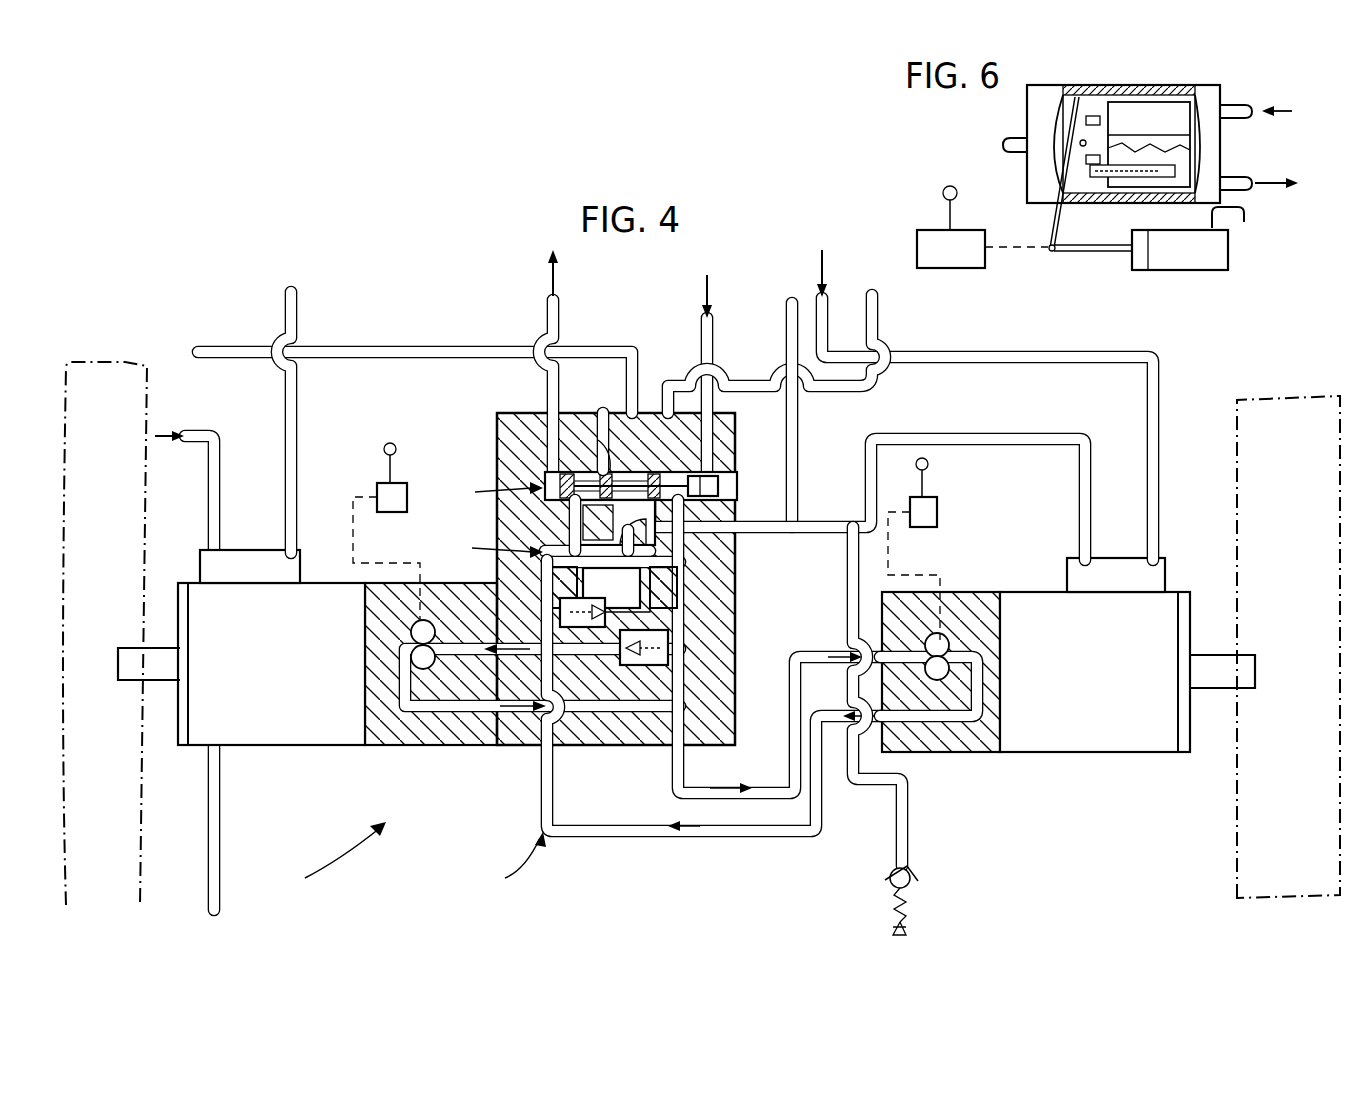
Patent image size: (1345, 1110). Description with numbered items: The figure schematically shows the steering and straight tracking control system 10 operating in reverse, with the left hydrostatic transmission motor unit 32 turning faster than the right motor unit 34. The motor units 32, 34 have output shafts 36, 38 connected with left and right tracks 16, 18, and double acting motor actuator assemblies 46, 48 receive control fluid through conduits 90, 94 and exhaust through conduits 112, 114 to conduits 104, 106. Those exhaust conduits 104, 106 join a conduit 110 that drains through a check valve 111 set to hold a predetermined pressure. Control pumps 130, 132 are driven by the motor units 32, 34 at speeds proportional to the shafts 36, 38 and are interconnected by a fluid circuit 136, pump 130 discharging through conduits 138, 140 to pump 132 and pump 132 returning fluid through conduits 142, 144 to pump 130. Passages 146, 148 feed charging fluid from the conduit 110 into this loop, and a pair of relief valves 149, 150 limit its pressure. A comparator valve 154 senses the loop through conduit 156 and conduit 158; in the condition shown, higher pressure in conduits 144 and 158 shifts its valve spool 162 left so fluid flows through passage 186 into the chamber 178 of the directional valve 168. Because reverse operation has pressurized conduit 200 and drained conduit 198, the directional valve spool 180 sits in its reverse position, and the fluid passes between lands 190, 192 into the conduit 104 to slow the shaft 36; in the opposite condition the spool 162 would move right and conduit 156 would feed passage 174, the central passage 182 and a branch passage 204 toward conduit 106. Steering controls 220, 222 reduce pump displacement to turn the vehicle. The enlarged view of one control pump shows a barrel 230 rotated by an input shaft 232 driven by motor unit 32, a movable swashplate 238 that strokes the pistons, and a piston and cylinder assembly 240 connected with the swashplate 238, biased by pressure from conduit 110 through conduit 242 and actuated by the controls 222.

In FIG. 4, the steering and straight tracking control system 10 is at (324, 859).
In FIG. 4, the left hand track 16 is at (100, 362).
In FIG. 4, the right hand track 18 is at (1285, 400).
In FIG. 4, the variable displacement motor unit 32 is at (270, 718).
In FIG. 4, the variable displacement motor unit 34 is at (1033, 605).
In FIG. 4, the output shaft 36 is at (116, 645).
In FIG. 4, the output shaft 38 is at (1260, 666).
In FIG. 4, the motor actuator assembly 46 is at (287, 560).
In FIG. 4, the motor actuator assembly 48 is at (1155, 562).
In FIG. 4, the conduit 90 is at (209, 500).
In FIG. 4, the conduit 94 is at (983, 363).
In FIG. 4, the conduit 104 is at (420, 352).
In FIG. 4, the conduit 106 is at (878, 386).
In FIG. 4, the conduit 110 is at (798, 433).
In FIG. 4, the check valve 111 is at (915, 890).
In FIG. 4, the conduit 112 is at (283, 378).
In FIG. 4, the conduit 114 is at (965, 440).
In FIG. 4, the control pump 130 is at (415, 623).
In FIG. 6, the control pump 130 is at (1224, 80).
In FIG. 4, the control pump 132 is at (947, 640).
In FIG. 4, the fluid circuit 136 is at (673, 727).
In FIG. 4, the conduit 138 is at (437, 648).
In FIG. 6, the conduit 138 is at (1250, 105).
In FIG. 4, the conduit 140 is at (735, 832).
In FIG. 4, the conduit 142 is at (672, 790).
In FIG. 4, the conduit 144 is at (458, 708).
In FIG. 6, the conduit 144 is at (1250, 178).
In FIG. 4, the passage 146 is at (552, 588).
In FIG. 4, the passage 148 is at (685, 600).
In FIG. 4, the relief valve 149 is at (611, 588).
In FIG. 4, the relief valve 150 is at (633, 662).
In FIG. 4, the comparator valve 154 is at (540, 529).
In FIG. 4, the conduit 156 is at (500, 577).
In FIG. 4, the conduit 158 is at (677, 625).
In FIG. 4, the valve spool 162 is at (677, 578).
In FIG. 4, the directional valve 168 is at (585, 478).
In FIG. 4, the passage 174 is at (577, 515).
In FIG. 4, the chamber 178 is at (735, 502).
In FIG. 4, the directional valve spool 180 is at (718, 490).
In FIG. 4, the central passage 182 is at (555, 480).
In FIG. 4, the passage 186 is at (660, 527).
In FIG. 4, the land 190 is at (600, 458).
In FIG. 4, the land 192 is at (706, 470).
In FIG. 4, the conduit 198 is at (560, 303).
In FIG. 4, the conduit 200 is at (702, 330).
In FIG. 4, the branch passage 204 is at (605, 440).
In FIG. 4, the steering control 220 is at (937, 512).
In FIG. 4, the steering control 222 is at (380, 483).
In FIG. 6, the steering control 222 is at (930, 230).
In FIG. 6, the barrel 230 is at (1148, 102).
In FIG. 6, the input shaft 232 is at (1003, 145).
In FIG. 6, the swashplate 238 is at (1080, 95).
In FIG. 6, the piston and cylinder assembly 240 is at (1150, 230).
In FIG. 6, the conduit 242 is at (1244, 222).